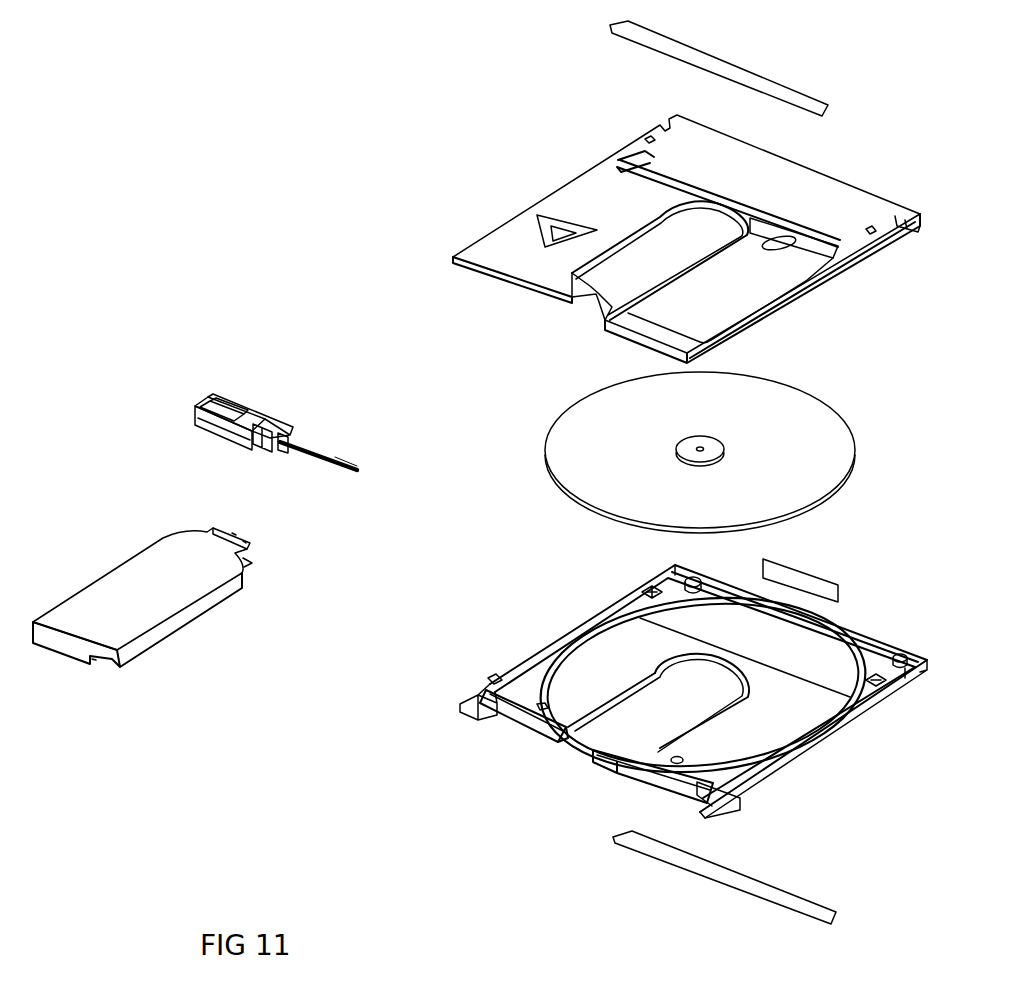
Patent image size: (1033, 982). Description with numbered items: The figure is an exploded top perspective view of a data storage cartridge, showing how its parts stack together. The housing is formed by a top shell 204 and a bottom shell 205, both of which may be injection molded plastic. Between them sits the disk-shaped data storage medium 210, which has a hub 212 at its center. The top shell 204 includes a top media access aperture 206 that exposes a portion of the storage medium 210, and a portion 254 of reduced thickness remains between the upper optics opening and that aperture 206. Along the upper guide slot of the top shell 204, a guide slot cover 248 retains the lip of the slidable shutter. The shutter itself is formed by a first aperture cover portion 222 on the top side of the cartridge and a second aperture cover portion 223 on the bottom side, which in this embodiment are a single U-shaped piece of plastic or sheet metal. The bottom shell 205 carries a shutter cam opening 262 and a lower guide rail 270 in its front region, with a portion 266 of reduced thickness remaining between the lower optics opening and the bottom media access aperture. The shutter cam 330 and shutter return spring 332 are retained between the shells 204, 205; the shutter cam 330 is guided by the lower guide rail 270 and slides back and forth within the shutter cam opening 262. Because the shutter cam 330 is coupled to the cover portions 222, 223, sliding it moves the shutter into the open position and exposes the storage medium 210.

The top shell 204 is at (532, 211).
The bottom shell 205 is at (778, 758).
The top media access aperture 206 is at (708, 254).
The data storage medium 210 is at (579, 474).
The hub 212 is at (692, 456).
The first aperture cover portion 222 is at (108, 584).
The second aperture cover portion 223 is at (155, 637).
The guide slot cover 248 is at (804, 100).
The portion having a reduced thickness 254 is at (600, 303).
The shutter cam opening 262 is at (470, 731).
The portion having a reduced thickness 266 is at (575, 735).
The lower guide rail 270 is at (510, 723).
The shutter cam 330 is at (228, 434).
The shutter return spring 332 is at (332, 459).